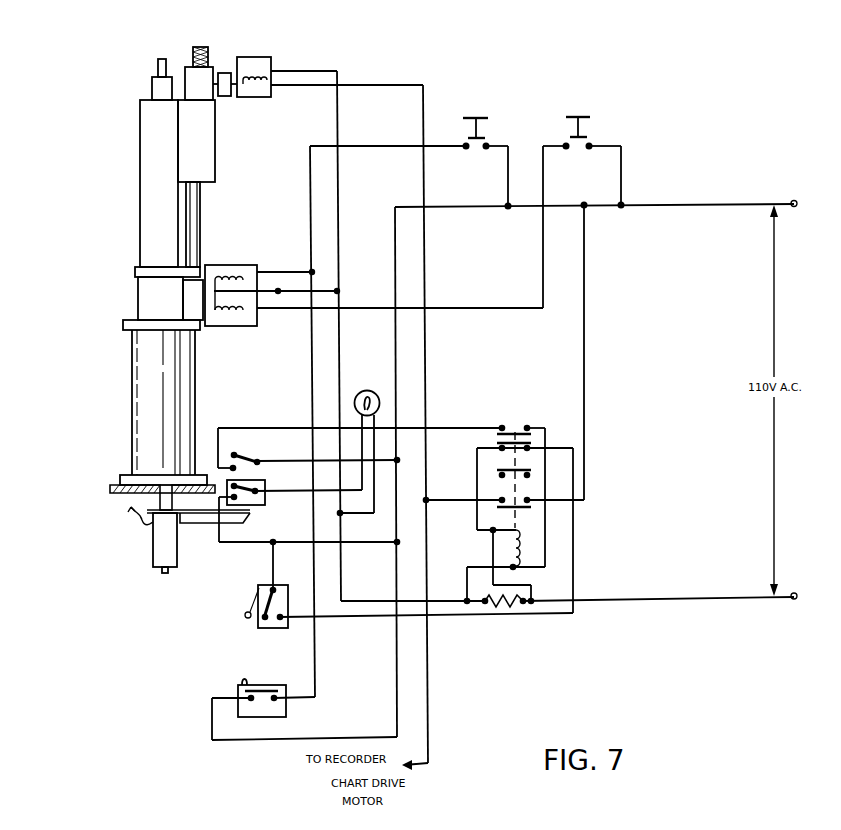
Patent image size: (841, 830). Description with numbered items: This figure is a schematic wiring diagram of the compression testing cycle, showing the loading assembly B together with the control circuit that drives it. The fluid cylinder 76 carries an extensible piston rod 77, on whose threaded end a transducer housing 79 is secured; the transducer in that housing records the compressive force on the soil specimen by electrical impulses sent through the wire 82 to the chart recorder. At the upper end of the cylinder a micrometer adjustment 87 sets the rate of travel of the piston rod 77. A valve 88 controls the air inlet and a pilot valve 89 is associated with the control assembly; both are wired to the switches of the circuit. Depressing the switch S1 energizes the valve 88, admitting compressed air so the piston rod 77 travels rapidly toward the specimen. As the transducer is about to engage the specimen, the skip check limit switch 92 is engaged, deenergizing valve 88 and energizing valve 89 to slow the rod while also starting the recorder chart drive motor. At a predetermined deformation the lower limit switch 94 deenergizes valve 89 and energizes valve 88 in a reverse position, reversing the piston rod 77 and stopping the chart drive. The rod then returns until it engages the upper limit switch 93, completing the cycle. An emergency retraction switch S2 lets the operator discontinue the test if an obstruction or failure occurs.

The burette assembly B is at (101, 335).
The fluid cylinder 76 is at (177, 391).
The piston rod 77 is at (160, 501).
The transducer housing 79 is at (153, 549).
The wire 82 is at (135, 520).
The micrometer adjustment 87 is at (206, 46).
The valve 88 is at (243, 296).
The pilot valve 89 is at (258, 64).
The skip check limit switch 92 is at (266, 586).
The upper limit switch 93 is at (257, 480).
The lower limit switch 94 is at (277, 684).
The switch S1 is at (578, 115).
The emergency retraction switch S2 is at (476, 116).